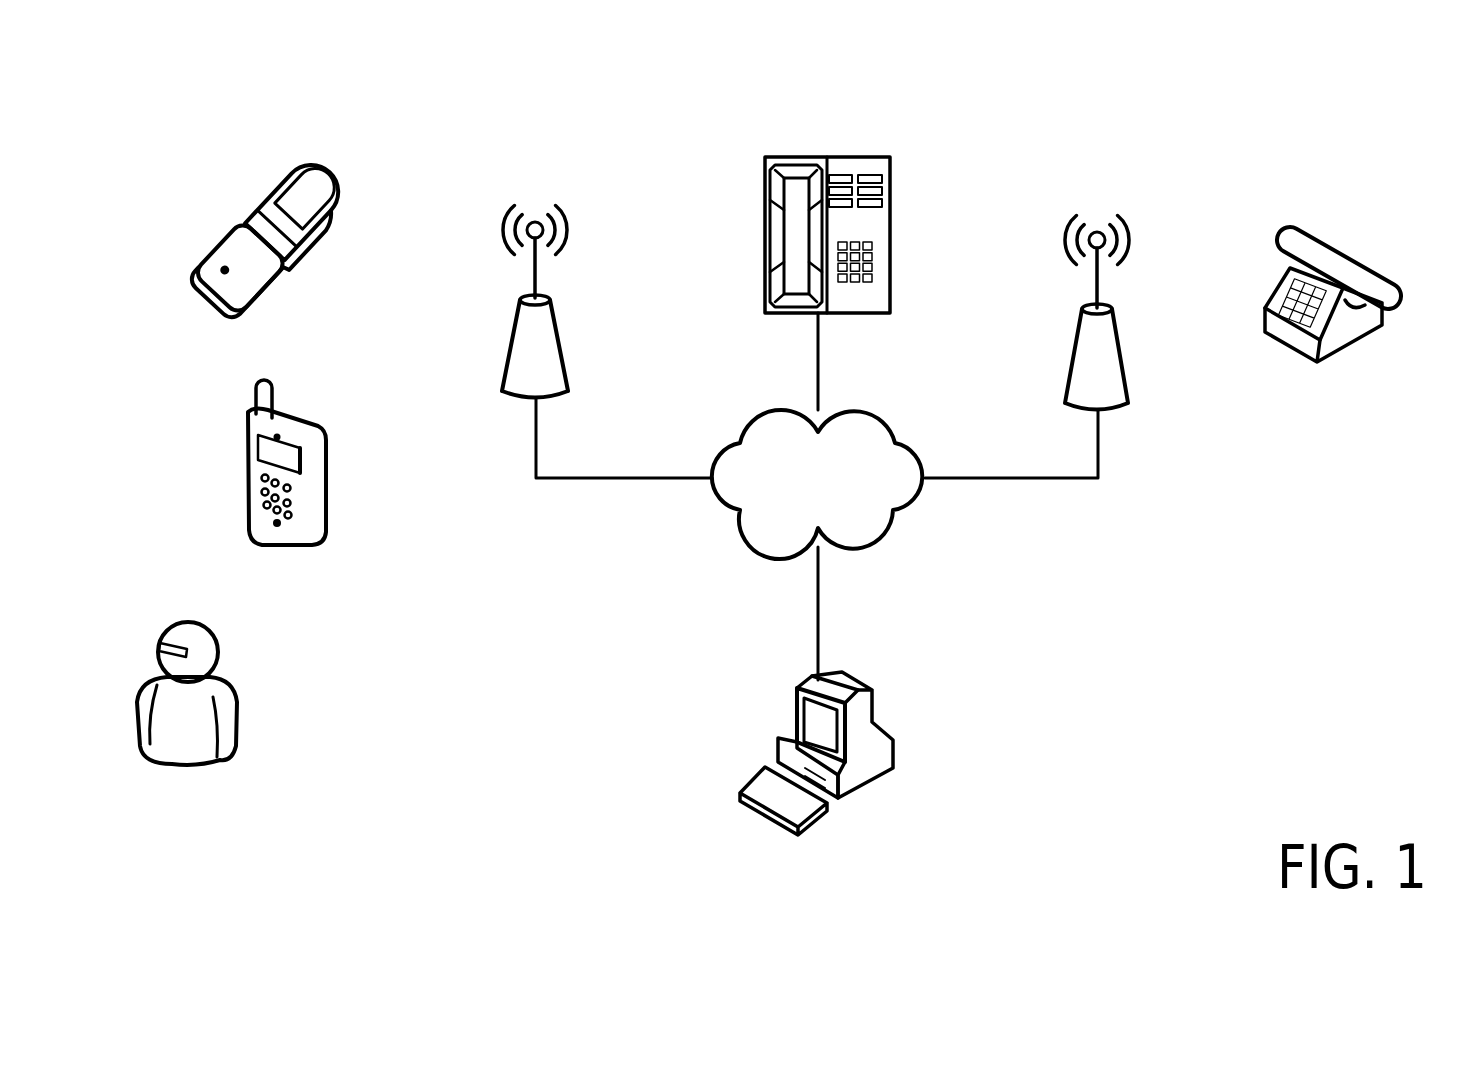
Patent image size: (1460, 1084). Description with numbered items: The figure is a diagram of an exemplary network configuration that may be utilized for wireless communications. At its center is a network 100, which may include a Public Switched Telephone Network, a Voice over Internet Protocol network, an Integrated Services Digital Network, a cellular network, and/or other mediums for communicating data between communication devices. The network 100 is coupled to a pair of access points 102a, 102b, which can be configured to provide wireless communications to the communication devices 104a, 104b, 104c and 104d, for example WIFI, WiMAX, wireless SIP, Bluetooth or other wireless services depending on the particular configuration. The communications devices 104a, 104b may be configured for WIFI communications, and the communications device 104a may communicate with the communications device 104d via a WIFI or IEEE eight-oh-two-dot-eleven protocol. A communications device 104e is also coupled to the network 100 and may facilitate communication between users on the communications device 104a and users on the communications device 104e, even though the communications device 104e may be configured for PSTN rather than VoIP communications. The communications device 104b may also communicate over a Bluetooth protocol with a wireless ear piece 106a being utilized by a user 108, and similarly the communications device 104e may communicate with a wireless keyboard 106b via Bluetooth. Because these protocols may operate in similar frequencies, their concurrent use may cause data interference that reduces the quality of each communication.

The network 100 is at (817, 484).
The access point 102a is at (562, 360).
The access point 102b is at (1073, 345).
The communications device 104a is at (318, 163).
The communications device 104b is at (298, 420).
The communications device 104c is at (890, 208).
The communications device 104d is at (1350, 250).
The communications device 104e is at (877, 730).
The wireless ear piece 106a is at (162, 647).
The wireless keyboard 106b is at (742, 792).
The user 108 is at (235, 715).